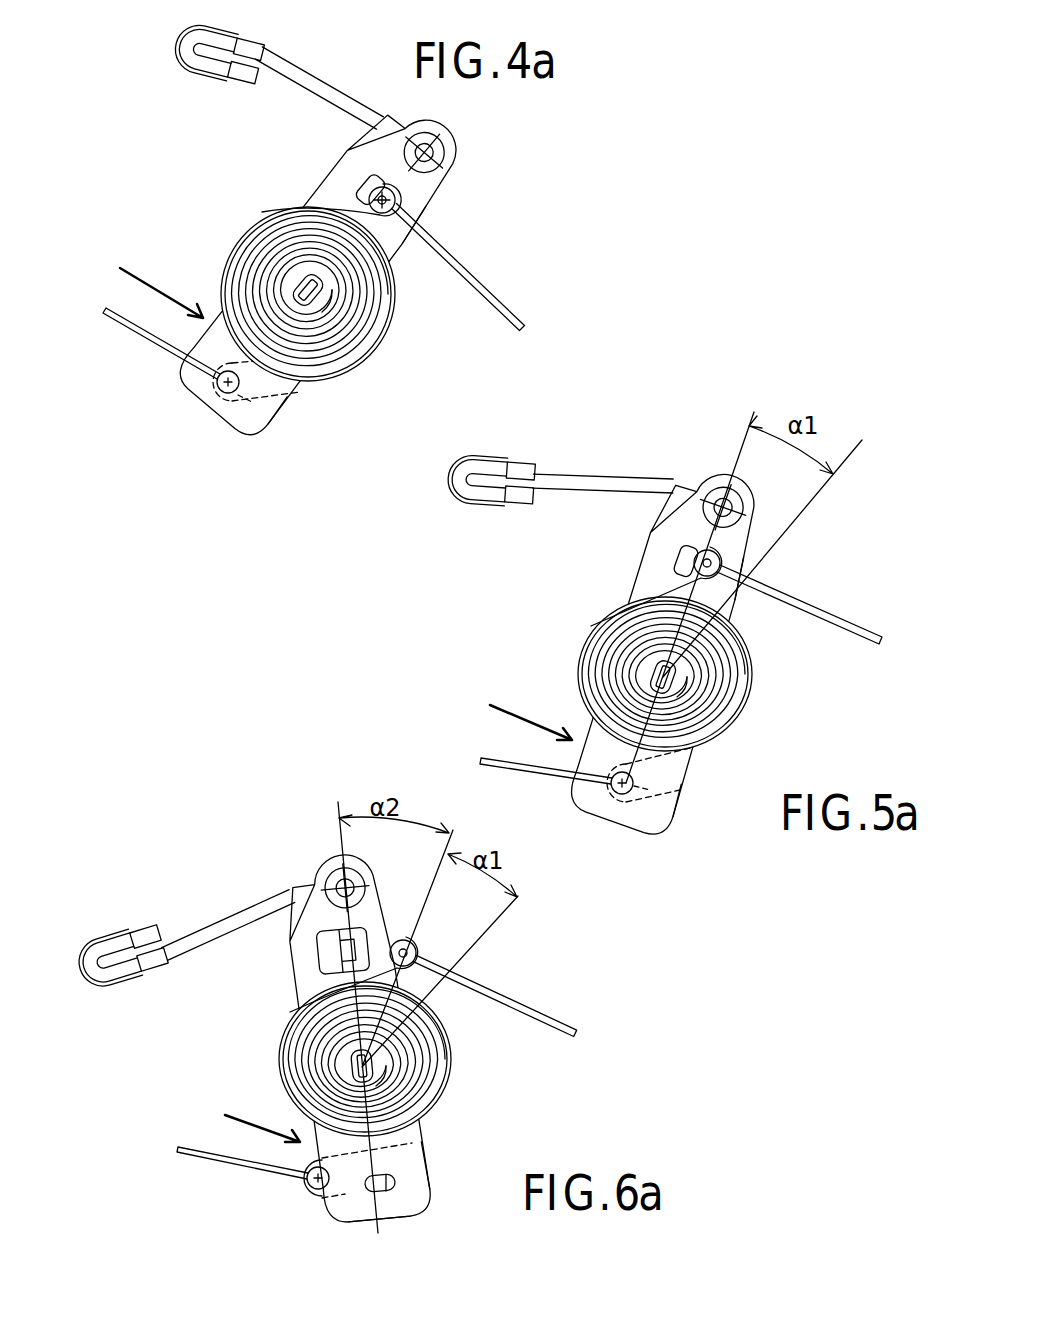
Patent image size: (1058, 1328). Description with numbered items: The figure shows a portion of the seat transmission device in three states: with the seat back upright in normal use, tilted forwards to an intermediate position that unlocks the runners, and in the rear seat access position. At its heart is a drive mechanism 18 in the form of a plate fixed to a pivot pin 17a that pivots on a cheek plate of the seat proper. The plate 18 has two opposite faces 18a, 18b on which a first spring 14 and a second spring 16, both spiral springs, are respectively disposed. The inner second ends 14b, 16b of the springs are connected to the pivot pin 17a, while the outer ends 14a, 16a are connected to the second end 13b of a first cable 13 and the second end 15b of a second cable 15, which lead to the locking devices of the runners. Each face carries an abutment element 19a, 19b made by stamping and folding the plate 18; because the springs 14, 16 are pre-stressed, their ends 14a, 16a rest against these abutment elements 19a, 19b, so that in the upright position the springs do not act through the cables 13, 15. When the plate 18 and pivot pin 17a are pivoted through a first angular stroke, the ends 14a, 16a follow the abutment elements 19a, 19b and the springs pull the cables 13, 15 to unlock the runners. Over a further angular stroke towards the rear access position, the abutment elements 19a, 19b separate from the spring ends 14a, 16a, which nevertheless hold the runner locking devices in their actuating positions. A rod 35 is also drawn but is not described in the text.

In FIG. 4A, the first cable 13 is at (514, 322).
In FIG. 5A, the first cable 13 is at (827, 617).
In FIG. 6A, the first cable 13 is at (537, 1015).
In FIG. 4A, the second end of the first cable 13b is at (396, 201).
In FIG. 5A, the second end of the first cable 13b is at (693, 566).
In FIG. 6A, the second end of the first cable 13b is at (417, 957).
In FIG. 4A, the first spring 14 is at (242, 240).
In FIG. 5A, the first spring 14 is at (581, 658).
In FIG. 6A, the first spring 14 is at (280, 1072).
In FIG. 4A, the end of the first spring 14a is at (397, 213).
In FIG. 5A, the end of the first spring 14a is at (720, 563).
In FIG. 6A, the end of the first spring 14a is at (389, 949).
In FIG. 4A, the second end of the first spring 14b is at (292, 278).
In FIG. 5A, the second end of the first spring 14b is at (647, 667).
In FIG. 6A, the second end of the first spring 14b is at (381, 1076).
In FIG. 4A, the second cable 15 is at (132, 328).
In FIG. 5A, the second cable 15 is at (497, 763).
In FIG. 6A, the second cable 15 is at (200, 1157).
In FIG. 4A, the second end of the second cable 15b is at (221, 391).
In FIG. 5A, the second end of the second cable 15b is at (622, 795).
In FIG. 6A, the second end of the second cable 15b is at (320, 1190).
In FIG. 4A, the second spring 16 is at (340, 377).
In FIG. 5A, the second spring 16 is at (735, 727).
In FIG. 6A, the second spring 16 is at (365, 1059).
In FIG. 4A, the end of the second spring 16a is at (212, 388).
In FIG. 5A, the end of the second spring 16a is at (583, 810).
In FIG. 6A, the end of the second spring 16a is at (303, 1182).
In FIG. 4A, the second end of the second spring 16b is at (296, 288).
In FIG. 5A, the second end of the second spring 16b is at (663, 677).
In FIG. 6A, the second end of the second spring 16b is at (362, 1066).
In FIG. 4A, the pivot pin 17a is at (314, 298).
In FIG. 5A, the pivot pin 17a is at (667, 680).
In FIG. 6A, the pivot pin 17a is at (375, 1082).
In FIG. 4A, the drive mechanism 18 is at (293, 266).
In FIG. 5A, the drive mechanism 18 is at (621, 648).
In FIG. 6A, the drive mechanism 18 is at (311, 1037).
In FIG. 4A, the face of the plate 18a is at (386, 256).
In FIG. 5A, the face of the plate 18a is at (739, 578).
In FIG. 6A, the face of the plate 18a is at (413, 1197).
In FIG. 4A, the face of the plate 18b is at (290, 403).
In FIG. 5A, the face of the plate 18b is at (677, 800).
In FIG. 6A, the face of the plate 18b is at (400, 1218).
In FIG. 4A, the abutment element 19a is at (362, 197).
In FIG. 5A, the abutment element 19a is at (680, 557).
In FIG. 6A, the abutment element 19a is at (327, 952).
In FIG. 4A, the abutment element 19b is at (240, 393).
In FIG. 5A, the abutment element 19b is at (638, 790).
In FIG. 6A, the abutment element 19b is at (400, 1178).
In FIG. 4A, the connecting rod with clevis 35 is at (286, 82).
In FIG. 5A, the connecting rod with clevis 35 is at (573, 478).
In FIG. 6A, the connecting rod with clevis 35 is at (227, 923).